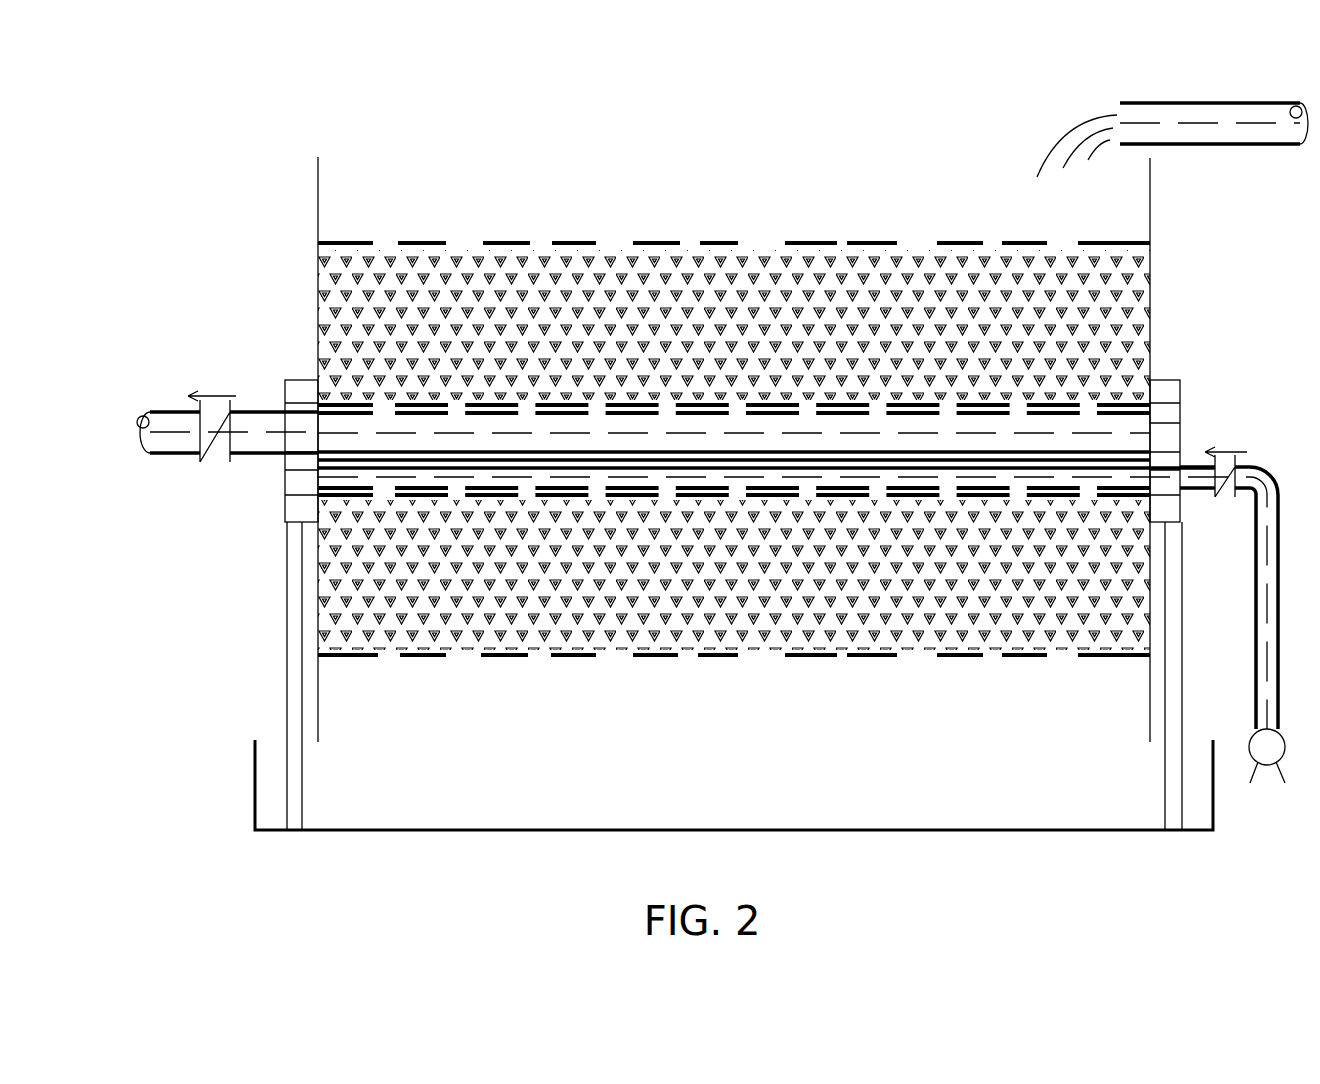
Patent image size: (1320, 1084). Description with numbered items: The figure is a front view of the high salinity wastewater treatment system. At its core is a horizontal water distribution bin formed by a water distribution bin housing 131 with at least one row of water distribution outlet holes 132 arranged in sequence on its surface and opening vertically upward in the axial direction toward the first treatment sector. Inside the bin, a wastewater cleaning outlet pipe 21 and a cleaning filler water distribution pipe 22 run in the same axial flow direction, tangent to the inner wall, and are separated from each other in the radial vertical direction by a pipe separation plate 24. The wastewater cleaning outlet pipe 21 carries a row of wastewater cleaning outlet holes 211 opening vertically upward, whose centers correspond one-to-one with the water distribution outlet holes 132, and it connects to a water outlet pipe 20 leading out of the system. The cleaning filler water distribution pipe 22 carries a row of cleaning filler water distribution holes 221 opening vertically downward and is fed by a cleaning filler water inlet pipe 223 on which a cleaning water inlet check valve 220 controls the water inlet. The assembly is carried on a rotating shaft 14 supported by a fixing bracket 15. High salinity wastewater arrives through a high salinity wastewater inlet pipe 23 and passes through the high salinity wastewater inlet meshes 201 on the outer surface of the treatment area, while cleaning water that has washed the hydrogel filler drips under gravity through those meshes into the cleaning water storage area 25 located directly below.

The water outlet pipe 20 is at (140, 415).
The high salinity wastewater inlet mesh 201 is at (388, 243).
The cleaning water inlet check valve 220 is at (538, 245).
The wastewater cleaning outlet pipe 21 is at (840, 412).
The wastewater cleaning outlet hole 211 is at (942, 412).
The high salinity wastewater inlet pipe 23 is at (1295, 148).
The rotating shaft 14 is at (1165, 378).
The pipe separation plate 24 is at (320, 504).
The fixing bracket 15 is at (287, 698).
The cleaning water storage area 25 is at (495, 826).
The cleaning filler water distribution pipe 22 is at (462, 490).
The cleaning filler water distribution hole 221 is at (515, 487).
The water distribution bin housing 131 is at (1068, 490).
The water distribution outlet hole 132 is at (1087, 492).
The cleaning filler water inlet pipe 223 is at (1250, 612).